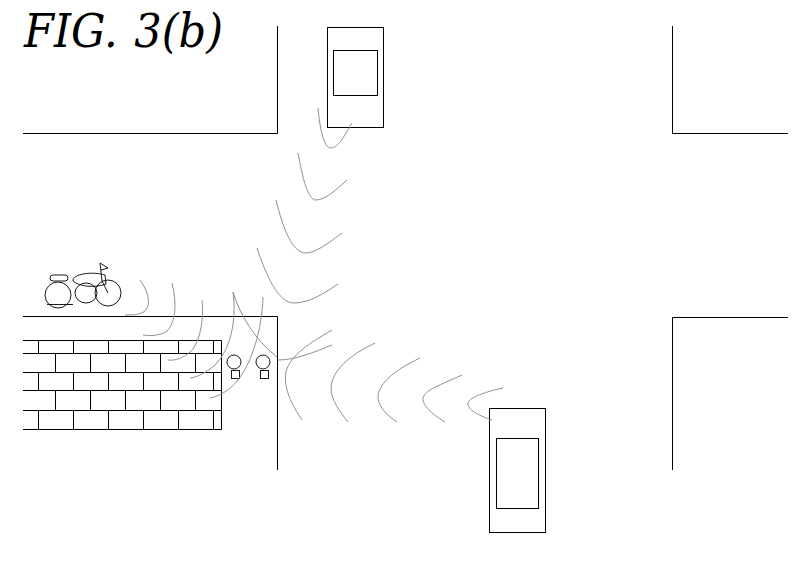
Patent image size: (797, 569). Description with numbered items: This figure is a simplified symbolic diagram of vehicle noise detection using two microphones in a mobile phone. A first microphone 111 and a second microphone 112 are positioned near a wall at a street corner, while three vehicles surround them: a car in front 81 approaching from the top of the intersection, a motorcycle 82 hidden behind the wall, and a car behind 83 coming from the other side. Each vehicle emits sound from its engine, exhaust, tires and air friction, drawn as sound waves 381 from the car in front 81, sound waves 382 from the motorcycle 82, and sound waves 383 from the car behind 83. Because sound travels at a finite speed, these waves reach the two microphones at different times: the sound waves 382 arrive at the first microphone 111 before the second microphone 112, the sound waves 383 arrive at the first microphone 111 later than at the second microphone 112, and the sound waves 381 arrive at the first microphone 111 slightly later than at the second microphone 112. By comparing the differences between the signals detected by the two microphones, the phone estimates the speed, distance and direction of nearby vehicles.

The car in front 81 is at (373, 108).
The motorcycle 82 is at (83, 277).
The car behind 83 is at (532, 428).
The first microphone 111 is at (233, 378).
The second microphone 112 is at (268, 371).
The sound waves emitted by the car in front 381 is at (322, 258).
The sound waves emitted by the motorcycle 382 is at (198, 303).
The sound waves emitted by the car behind 383 is at (420, 366).